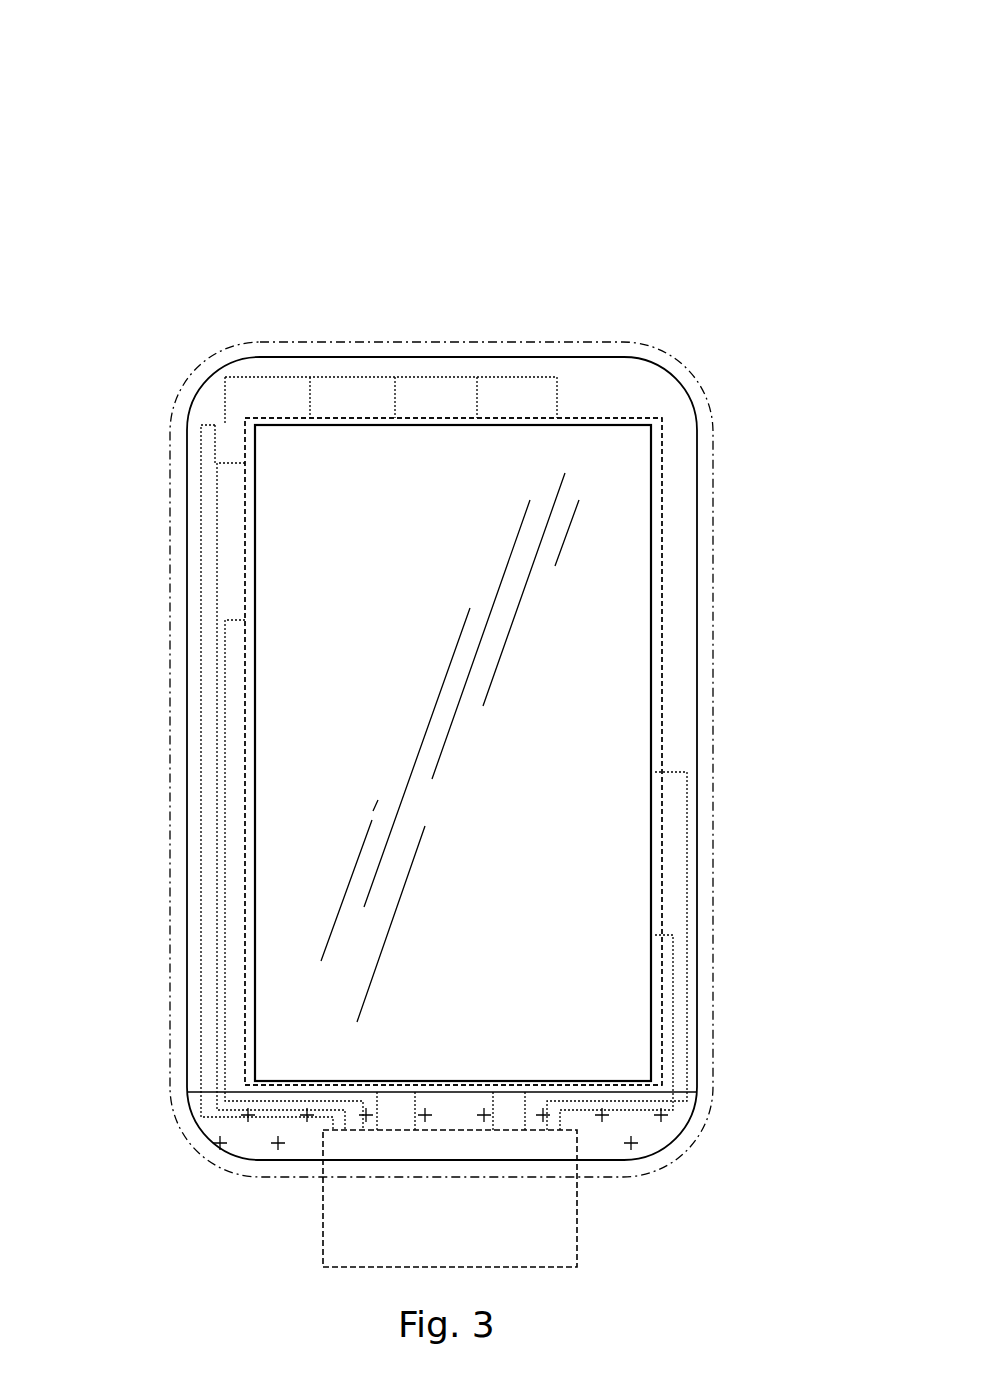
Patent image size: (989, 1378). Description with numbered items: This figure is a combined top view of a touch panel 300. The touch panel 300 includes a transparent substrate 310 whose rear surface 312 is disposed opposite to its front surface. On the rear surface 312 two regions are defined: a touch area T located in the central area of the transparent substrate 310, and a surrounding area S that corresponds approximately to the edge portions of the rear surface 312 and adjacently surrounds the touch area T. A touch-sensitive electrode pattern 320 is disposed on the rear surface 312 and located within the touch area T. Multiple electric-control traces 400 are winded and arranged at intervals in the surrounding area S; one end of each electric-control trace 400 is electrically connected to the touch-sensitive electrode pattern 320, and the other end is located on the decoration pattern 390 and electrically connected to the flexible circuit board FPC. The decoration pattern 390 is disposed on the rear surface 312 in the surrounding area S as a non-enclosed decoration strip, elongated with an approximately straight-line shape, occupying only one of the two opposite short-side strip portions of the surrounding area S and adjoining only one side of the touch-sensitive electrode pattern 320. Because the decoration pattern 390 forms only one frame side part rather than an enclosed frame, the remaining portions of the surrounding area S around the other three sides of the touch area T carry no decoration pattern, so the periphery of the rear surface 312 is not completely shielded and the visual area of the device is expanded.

The touch panel 300 is at (96, 128).
The surrounding area S is at (735, 352).
The transparent substrate 310 is at (200, 355).
The rear surface 312 is at (680, 505).
The touch area T is at (585, 397).
The touch-sensitive electrode pattern 320 is at (607, 622).
The electric-control traces 400 is at (225, 757).
The decoration pattern 390 is at (690, 1165).
The flexible circuit board FPC is at (380, 1203).